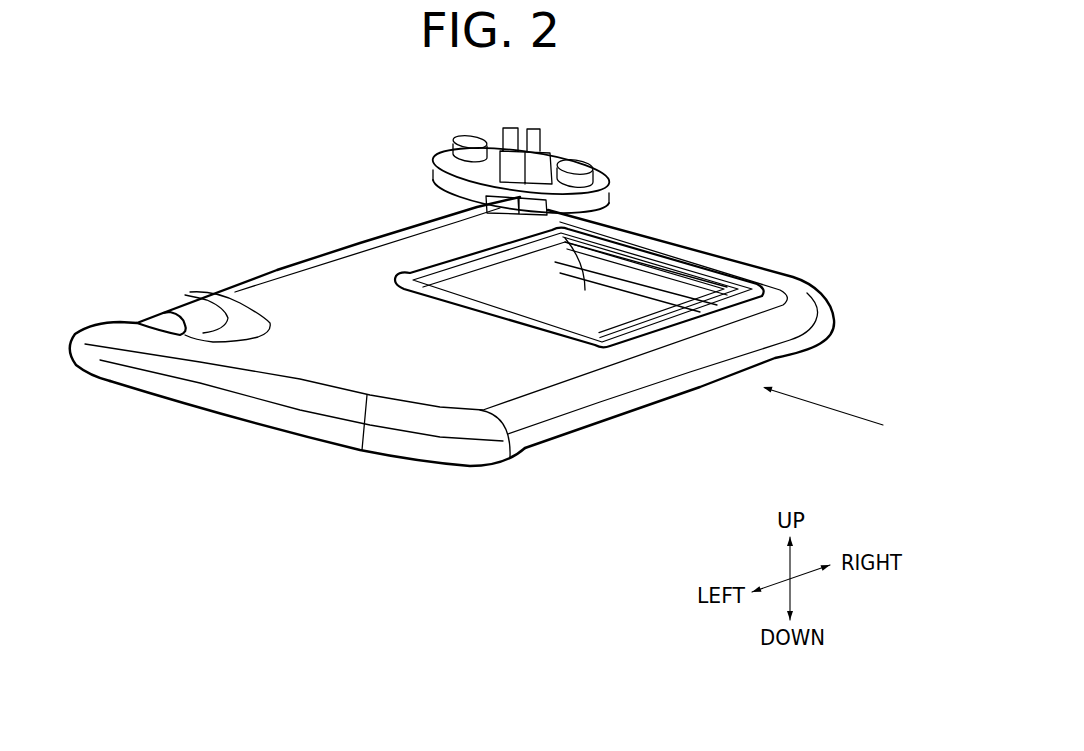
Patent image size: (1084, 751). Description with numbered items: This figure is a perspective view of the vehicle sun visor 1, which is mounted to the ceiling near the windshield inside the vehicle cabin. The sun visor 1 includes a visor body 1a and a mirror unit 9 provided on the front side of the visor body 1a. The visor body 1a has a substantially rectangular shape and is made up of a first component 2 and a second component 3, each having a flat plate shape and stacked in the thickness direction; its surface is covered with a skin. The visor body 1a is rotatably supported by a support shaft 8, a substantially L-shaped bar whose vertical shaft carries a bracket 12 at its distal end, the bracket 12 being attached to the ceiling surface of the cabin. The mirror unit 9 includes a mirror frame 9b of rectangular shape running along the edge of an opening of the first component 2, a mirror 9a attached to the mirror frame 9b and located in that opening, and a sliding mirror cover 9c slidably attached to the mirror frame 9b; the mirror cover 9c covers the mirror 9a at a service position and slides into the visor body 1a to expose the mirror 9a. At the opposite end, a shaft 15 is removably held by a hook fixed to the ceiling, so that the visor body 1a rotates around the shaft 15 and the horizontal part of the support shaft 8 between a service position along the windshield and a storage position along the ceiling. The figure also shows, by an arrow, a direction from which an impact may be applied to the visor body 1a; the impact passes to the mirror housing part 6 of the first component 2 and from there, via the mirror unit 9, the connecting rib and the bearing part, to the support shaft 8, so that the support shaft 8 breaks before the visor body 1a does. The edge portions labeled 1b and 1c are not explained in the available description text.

The vehicle sun visor 1 is at (268, 202).
The visor body 1a is at (468, 474).
The support shaft 1b is at (562, 163).
The recessed portion around hook 1c is at (200, 333).
The first component 2 is at (405, 370).
The second component 3 is at (290, 418).
The mirror housing part 6 is at (633, 352).
The support shaft 8 is at (486, 204).
The mirror unit 9 is at (657, 340).
The mirror 9a is at (610, 302).
The mirror frame 9b is at (700, 275).
The mirror cover 9c is at (640, 290).
The bracket 12 is at (433, 170).
The shaft 15 is at (150, 312).